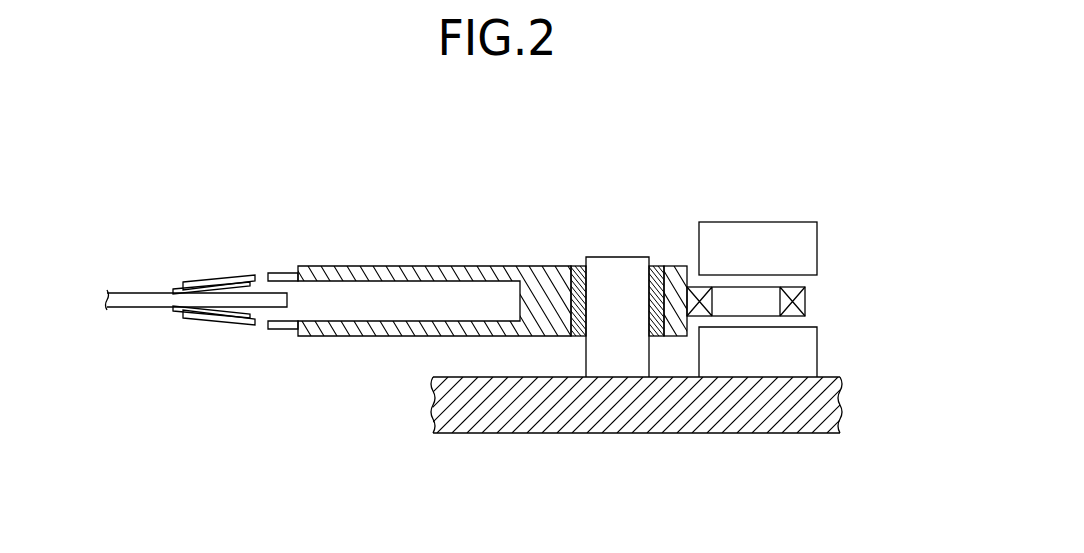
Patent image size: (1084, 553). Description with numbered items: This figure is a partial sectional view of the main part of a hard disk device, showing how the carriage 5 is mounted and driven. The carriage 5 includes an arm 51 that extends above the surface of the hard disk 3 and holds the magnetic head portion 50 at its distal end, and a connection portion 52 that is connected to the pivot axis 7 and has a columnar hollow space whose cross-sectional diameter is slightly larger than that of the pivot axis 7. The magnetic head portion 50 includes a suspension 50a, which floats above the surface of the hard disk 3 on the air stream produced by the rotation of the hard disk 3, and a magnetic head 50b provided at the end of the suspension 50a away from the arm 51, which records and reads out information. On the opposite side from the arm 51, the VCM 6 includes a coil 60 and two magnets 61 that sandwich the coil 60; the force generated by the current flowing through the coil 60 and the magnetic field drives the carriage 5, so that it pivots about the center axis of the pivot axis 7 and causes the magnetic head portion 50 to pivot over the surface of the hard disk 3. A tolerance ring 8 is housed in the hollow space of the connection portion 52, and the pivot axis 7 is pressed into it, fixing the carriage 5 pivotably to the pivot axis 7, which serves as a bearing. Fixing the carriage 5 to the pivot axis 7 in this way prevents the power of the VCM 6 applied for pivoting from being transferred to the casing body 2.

The casing body 2 is at (740, 433).
The hard disk 3 is at (132, 293).
The carriage 5 is at (470, 266).
The VCM 6 is at (868, 327).
The pivot axis 7 is at (613, 268).
The tolerance ring 8 is at (578, 266).
The magnetic head portion 50 is at (252, 210).
The suspension 50a is at (225, 275).
The magnetic head 50b is at (172, 293).
The arm 51 is at (417, 321).
The connection portion 52 is at (648, 264).
The coil 60 is at (805, 296).
The magnets 61 is at (817, 245).